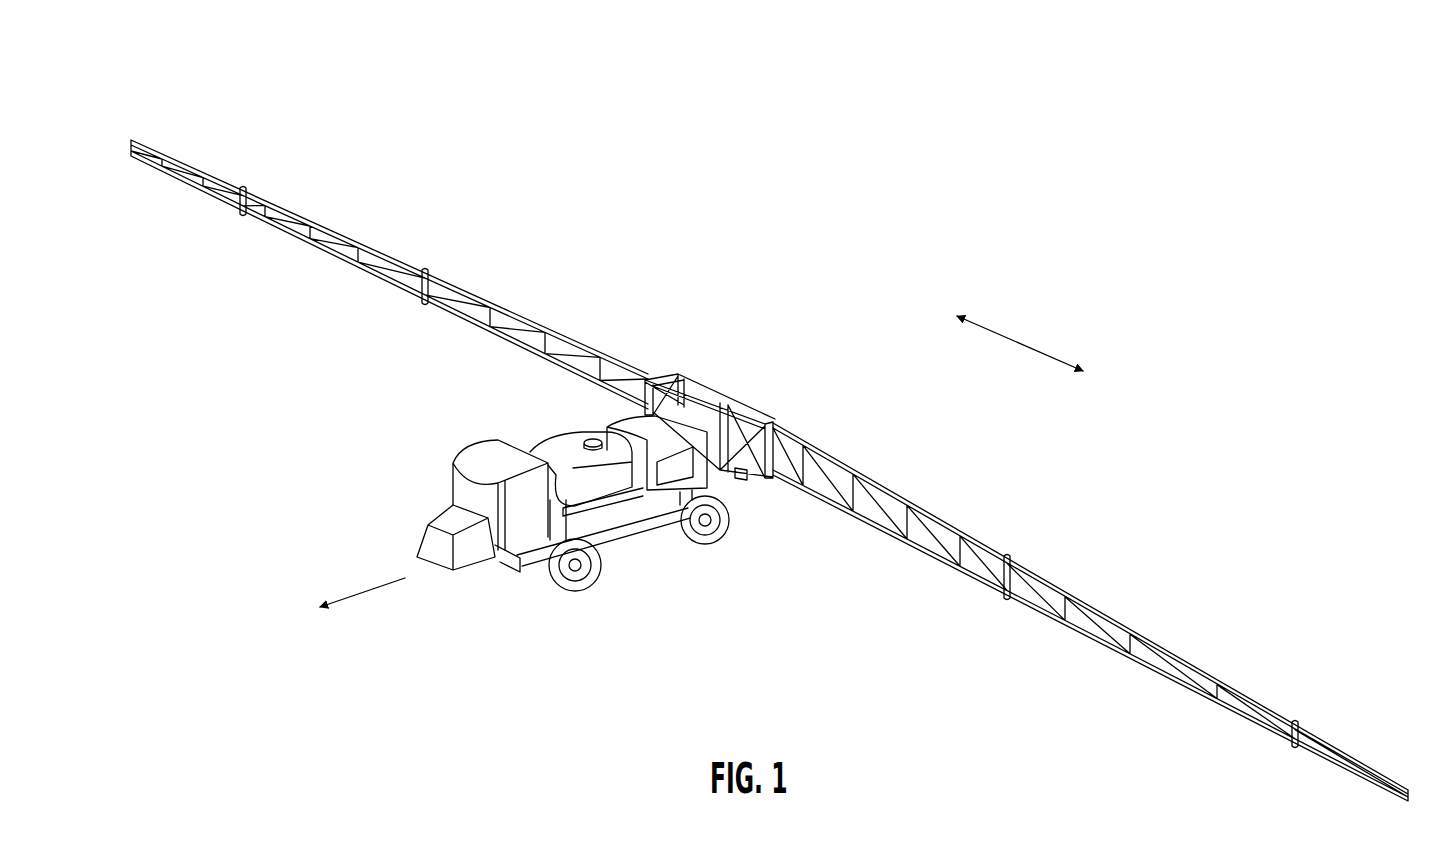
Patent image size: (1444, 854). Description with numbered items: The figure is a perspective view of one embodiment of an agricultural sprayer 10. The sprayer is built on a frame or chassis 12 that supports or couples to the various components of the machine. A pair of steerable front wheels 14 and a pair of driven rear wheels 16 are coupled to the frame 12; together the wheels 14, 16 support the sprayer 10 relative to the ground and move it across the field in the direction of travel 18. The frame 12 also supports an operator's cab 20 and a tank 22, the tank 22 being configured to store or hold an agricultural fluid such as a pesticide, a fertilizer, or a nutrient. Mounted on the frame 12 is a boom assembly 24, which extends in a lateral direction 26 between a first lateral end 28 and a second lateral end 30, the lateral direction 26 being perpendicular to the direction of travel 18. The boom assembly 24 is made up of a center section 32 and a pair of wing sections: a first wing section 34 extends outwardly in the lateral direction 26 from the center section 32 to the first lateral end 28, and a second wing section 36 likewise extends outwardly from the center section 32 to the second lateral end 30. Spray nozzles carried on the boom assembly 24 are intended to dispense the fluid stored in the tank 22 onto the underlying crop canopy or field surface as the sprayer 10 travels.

The agricultural sprayer 10 is at (214, 131).
The frame or chassis 12 is at (612, 535).
The front wheels 14 is at (570, 592).
The rear wheels 16 is at (714, 544).
The direction of travel 18 is at (360, 599).
The operator's cab 20 is at (480, 457).
The tank 22 is at (555, 447).
The boom assembly 24 is at (827, 430).
The lateral direction 26 is at (1022, 342).
The first lateral end 28 is at (1417, 767).
The second lateral end 30 is at (97, 121).
The center section 32 is at (725, 403).
The first wing section 34 is at (1130, 630).
The second wing section 36 is at (315, 221).